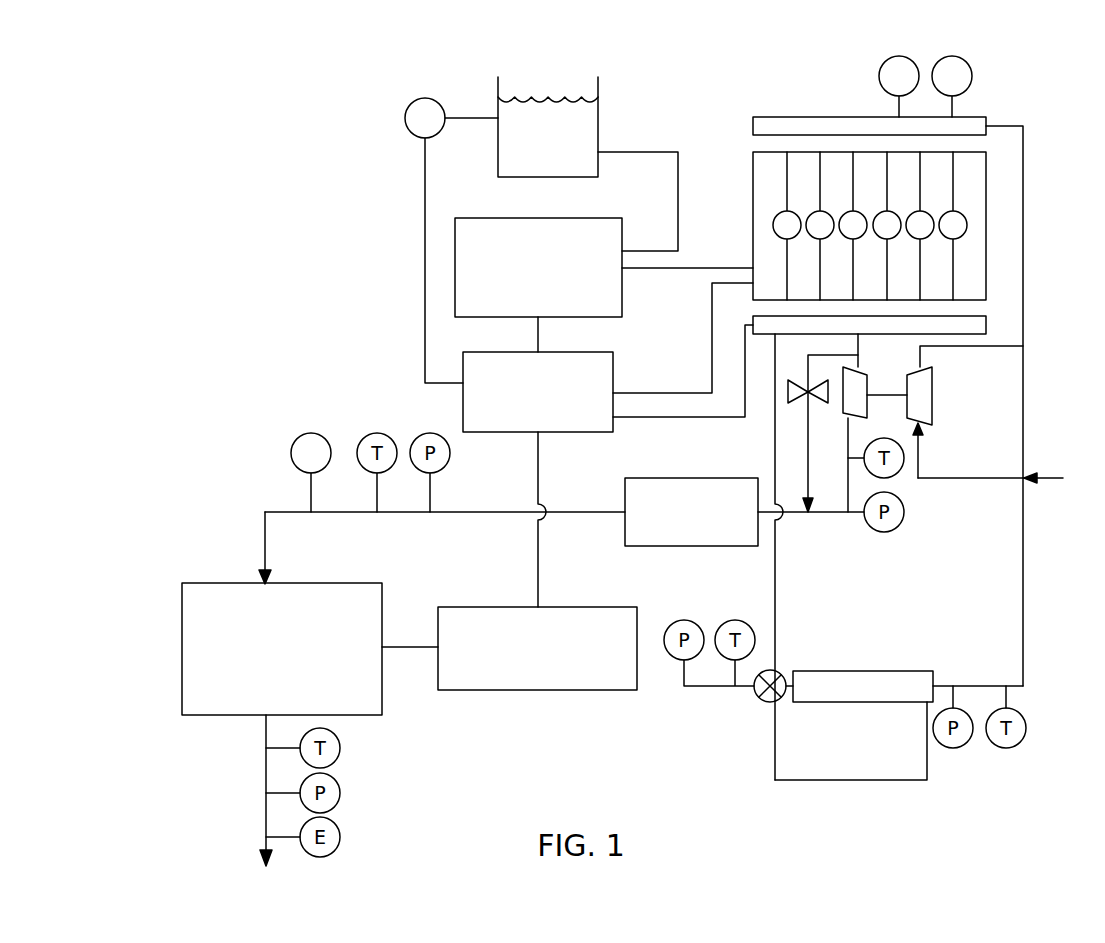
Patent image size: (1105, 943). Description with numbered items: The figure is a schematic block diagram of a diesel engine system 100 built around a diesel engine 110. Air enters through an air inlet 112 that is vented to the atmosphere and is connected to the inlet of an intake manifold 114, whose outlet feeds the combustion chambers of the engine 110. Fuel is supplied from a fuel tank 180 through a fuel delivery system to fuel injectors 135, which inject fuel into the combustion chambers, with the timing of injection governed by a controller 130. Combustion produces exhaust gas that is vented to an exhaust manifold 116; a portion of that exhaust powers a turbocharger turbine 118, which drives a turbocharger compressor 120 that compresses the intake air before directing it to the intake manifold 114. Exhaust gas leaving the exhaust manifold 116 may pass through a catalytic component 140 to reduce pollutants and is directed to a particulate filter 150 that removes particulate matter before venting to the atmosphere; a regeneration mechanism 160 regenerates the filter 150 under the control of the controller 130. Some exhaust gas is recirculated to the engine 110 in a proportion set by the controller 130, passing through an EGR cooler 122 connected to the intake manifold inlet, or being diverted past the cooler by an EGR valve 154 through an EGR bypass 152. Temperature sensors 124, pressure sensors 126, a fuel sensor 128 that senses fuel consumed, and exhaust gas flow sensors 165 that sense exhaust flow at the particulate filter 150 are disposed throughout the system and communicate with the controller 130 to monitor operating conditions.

The diesel engine system 100 is at (268, 134).
The diesel engine 110 is at (967, 225).
The air inlet 112 is at (1058, 480).
The intake manifold 114 is at (820, 117).
The exhaust manifold 116 is at (892, 334).
The turbocharger turbine 118 is at (842, 414).
The turbocharger compressor 120 is at (932, 393).
The exhaust gas recirculation (EGR) cooler 122 is at (858, 703).
The temperature sensors 124 is at (883, 60).
The pressure sensors 126 is at (972, 76).
The fuel sensor 128 is at (425, 98).
The controller 130 is at (538, 392).
The fuel injectors 135 is at (538, 267).
The catalytic component 140 is at (698, 547).
The particulate filter 150 is at (282, 649).
The EGR bypass 152 is at (867, 781).
The EGR valve 154 is at (762, 700).
The regeneration mechanism 160 is at (537, 648).
The exhaust gas flow sensors 165 is at (311, 433).
The fuel tank 180 is at (498, 128).